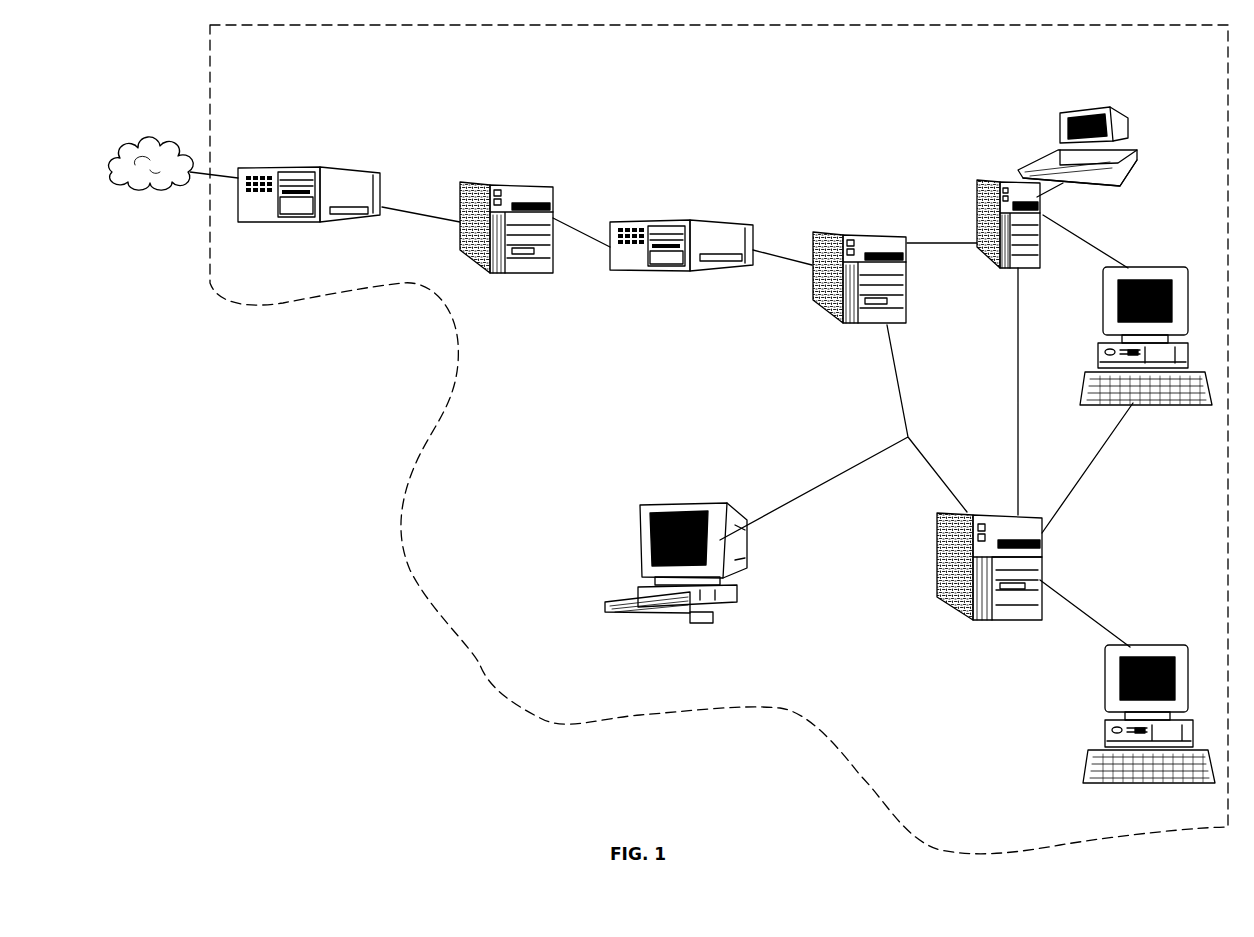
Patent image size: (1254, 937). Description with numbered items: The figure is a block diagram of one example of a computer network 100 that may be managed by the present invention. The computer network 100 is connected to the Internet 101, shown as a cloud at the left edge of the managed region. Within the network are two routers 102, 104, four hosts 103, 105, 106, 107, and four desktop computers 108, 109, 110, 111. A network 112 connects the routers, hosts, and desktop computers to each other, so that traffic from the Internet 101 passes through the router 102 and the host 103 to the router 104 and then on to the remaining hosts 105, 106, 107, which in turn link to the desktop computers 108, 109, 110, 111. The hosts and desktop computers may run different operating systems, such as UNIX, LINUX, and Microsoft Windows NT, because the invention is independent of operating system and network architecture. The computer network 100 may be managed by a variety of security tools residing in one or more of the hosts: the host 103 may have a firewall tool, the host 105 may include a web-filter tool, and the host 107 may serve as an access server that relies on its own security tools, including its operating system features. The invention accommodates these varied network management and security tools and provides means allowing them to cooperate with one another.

The computer network 100 is at (577, 727).
The Internet 101 is at (155, 148).
The router 102 is at (285, 168).
The host 103 is at (498, 182).
The router 104 is at (675, 220).
The host 105 is at (893, 325).
The host 106 is at (977, 212).
The host 107 is at (1013, 622).
The desktop computer 108 is at (737, 595).
The desktop computer 109 is at (1060, 135).
The desktop computer 110 is at (1158, 403).
The desktop computer 111 is at (1107, 680).
The network 112 is at (568, 250).